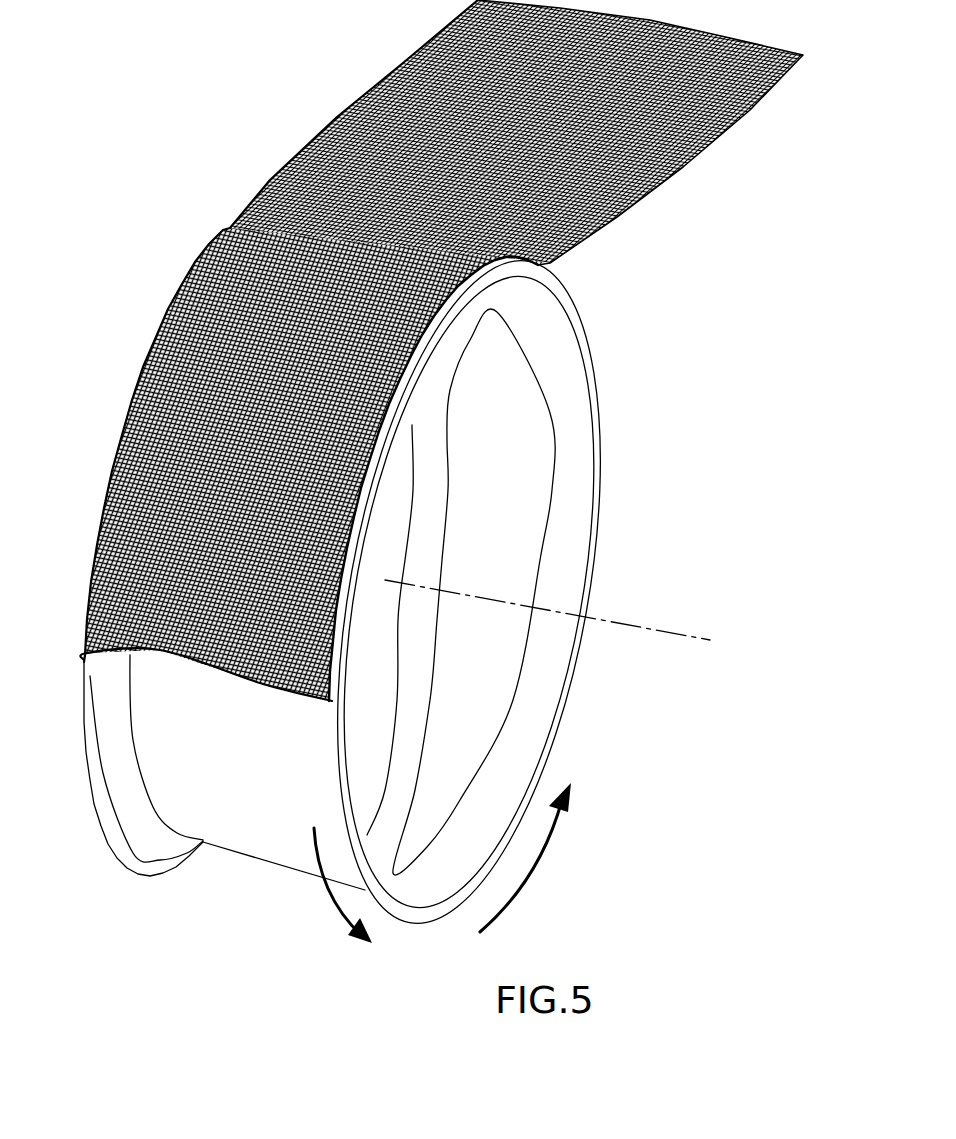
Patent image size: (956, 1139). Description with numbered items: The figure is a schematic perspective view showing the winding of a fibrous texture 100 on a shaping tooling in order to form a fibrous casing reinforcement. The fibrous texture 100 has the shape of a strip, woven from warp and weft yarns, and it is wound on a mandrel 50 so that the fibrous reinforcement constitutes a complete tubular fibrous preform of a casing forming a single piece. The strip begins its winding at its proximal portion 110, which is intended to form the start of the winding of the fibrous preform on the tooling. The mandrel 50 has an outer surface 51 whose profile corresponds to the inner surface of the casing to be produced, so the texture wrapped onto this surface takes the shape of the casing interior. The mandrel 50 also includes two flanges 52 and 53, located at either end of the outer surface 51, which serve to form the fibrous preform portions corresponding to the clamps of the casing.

The fibrous texture 100 is at (478, 380).
The proximal portion 110 is at (206, 701).
The mandrel 50 is at (386, 607).
The outer surface 51 is at (212, 822).
The flange 52 is at (422, 922).
The flange 53 is at (155, 868).